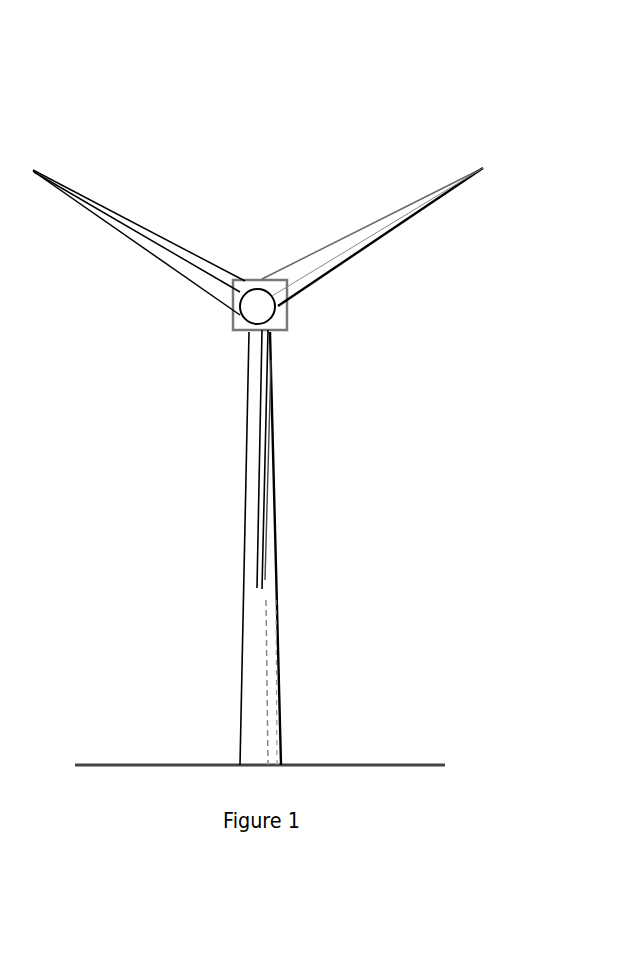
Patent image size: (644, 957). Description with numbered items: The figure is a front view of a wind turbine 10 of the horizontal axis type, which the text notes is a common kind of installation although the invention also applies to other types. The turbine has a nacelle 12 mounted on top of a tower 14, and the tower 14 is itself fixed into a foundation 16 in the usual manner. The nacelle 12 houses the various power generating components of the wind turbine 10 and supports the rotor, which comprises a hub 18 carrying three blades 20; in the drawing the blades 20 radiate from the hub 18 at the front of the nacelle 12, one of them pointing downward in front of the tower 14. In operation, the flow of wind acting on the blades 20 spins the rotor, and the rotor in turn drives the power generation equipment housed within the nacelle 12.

The wind turbine 10 is at (516, 98).
The nacelle 12 is at (262, 278).
The tower 14 is at (241, 657).
The foundation 16 is at (283, 765).
The hub 18 is at (260, 313).
The blades 20 is at (140, 230).